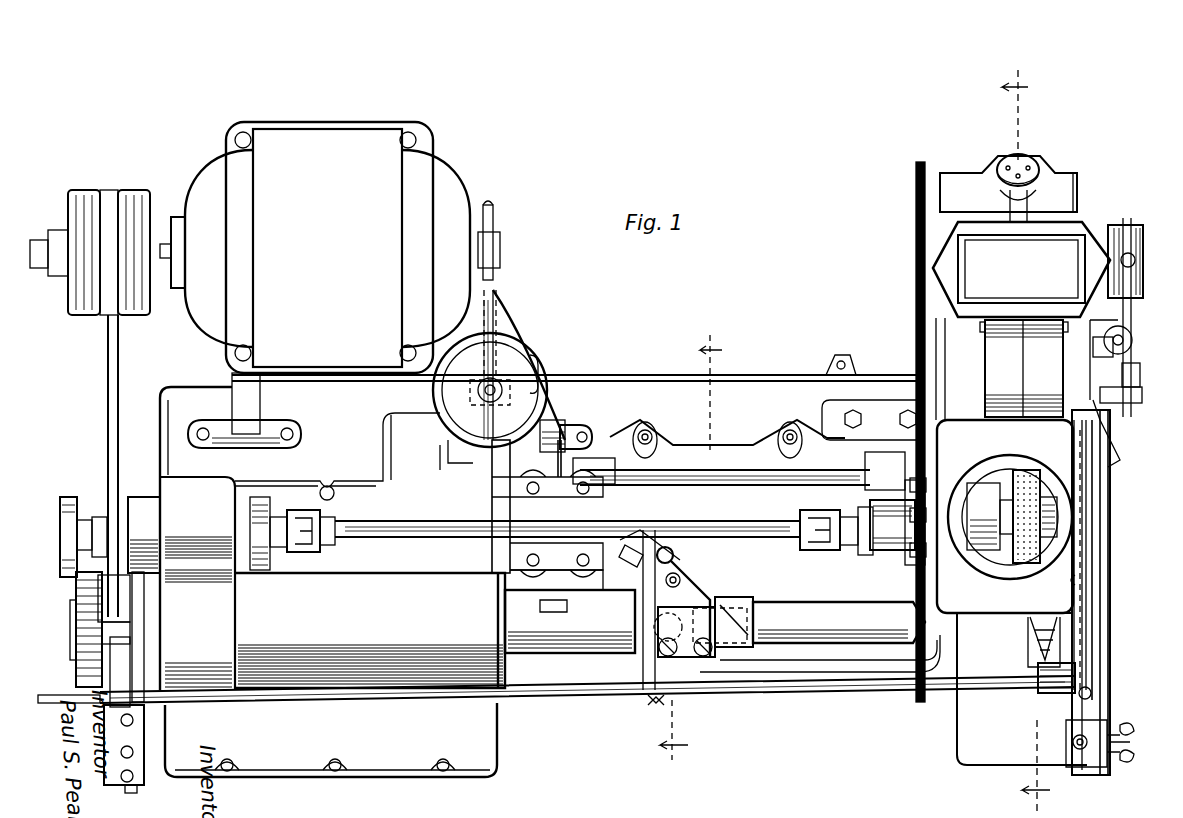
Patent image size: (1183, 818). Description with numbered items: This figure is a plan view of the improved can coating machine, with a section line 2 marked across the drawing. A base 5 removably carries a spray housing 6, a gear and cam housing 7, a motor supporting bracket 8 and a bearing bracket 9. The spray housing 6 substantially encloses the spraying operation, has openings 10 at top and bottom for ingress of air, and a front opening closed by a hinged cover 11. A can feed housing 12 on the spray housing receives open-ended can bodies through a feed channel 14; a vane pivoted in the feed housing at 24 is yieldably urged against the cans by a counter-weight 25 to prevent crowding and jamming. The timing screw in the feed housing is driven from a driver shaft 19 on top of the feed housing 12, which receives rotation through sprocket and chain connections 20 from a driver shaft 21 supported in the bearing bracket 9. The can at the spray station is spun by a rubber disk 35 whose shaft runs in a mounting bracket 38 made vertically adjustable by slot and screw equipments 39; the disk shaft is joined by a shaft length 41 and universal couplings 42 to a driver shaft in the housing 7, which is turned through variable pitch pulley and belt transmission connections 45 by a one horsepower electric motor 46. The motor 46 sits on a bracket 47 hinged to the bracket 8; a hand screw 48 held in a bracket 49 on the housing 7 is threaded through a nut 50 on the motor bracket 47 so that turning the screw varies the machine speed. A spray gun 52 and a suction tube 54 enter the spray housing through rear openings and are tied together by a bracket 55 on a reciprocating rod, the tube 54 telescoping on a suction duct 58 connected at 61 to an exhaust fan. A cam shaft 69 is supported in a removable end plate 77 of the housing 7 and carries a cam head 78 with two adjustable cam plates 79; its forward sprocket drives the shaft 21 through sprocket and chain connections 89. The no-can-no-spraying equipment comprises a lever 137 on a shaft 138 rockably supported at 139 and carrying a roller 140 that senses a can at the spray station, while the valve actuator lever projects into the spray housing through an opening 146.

The section line 2- 2 is at (1026, 433).
The base 5 is at (684, 546).
The spray housing 6 is at (1060, 600).
The gear and cam housing 7 is at (542, 576).
The motor supporting bracket 8 is at (220, 426).
The bearing bracket 9 is at (673, 448).
The openings 10 is at (1015, 470).
The hinged cover 11 is at (1098, 648).
The can feed housing 12 is at (962, 333).
The feed channel 14 is at (1068, 220).
The driver shaft 19 is at (1078, 176).
The sprocket and chain connections 20 is at (916, 236).
The driver shaft 21 is at (718, 475).
The pivot 24 is at (1135, 392).
The counter-weight 25 is at (1138, 230).
The rubber disk 35 is at (1015, 560).
The mounting bracket 38 is at (920, 555).
The slot and screw equipments 39 is at (925, 480).
The shaft length 41 is at (772, 540).
The universal couplings 42 is at (822, 545).
The variable pitch pulley and belt transmission connections 45 is at (108, 333).
The electric motor 46 is at (315, 247).
The motor bracket 47 is at (505, 340).
The hand screw 48 is at (500, 305).
The bracket 49 is at (540, 345).
The nut 50 is at (498, 228).
The spray gun 52 is at (685, 552).
The suction tube 54 is at (798, 620).
The bracket 55 is at (655, 590).
The suction duct 58 is at (650, 648).
The connection 61 is at (672, 698).
The shaft 69 is at (70, 631).
The removable end plate 77 is at (181, 583).
The cam head 78 is at (80, 640).
The cam plates 79 is at (112, 690).
The sprocket and chain connections 89 is at (570, 611).
The lever 137 is at (142, 650).
The shaft 138 is at (885, 693).
The rockable support 139 is at (140, 765).
The roller 140 is at (120, 630).
The opening 146 is at (1080, 578).